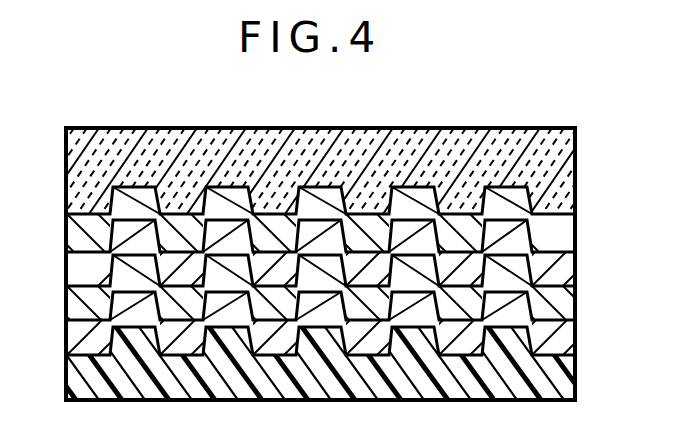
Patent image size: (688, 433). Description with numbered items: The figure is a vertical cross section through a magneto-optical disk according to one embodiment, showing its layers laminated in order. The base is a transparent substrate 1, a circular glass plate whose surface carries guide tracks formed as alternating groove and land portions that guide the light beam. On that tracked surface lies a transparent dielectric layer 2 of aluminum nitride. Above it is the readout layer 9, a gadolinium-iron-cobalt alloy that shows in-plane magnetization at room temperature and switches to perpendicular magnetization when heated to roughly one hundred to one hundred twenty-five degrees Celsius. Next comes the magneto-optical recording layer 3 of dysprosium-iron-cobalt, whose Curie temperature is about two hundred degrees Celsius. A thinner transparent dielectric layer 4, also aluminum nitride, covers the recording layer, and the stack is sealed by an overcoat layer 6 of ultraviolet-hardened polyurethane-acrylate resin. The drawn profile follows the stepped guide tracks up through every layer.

The transparent substrate 1 is at (577, 158).
The transparent dielectric layer 2 is at (577, 238).
The readout layer 9 is at (577, 278).
The magneto-optical recording layer 3 is at (578, 308).
The transparent dielectric layer 4 is at (578, 343).
The overcoat layer 6 is at (578, 388).